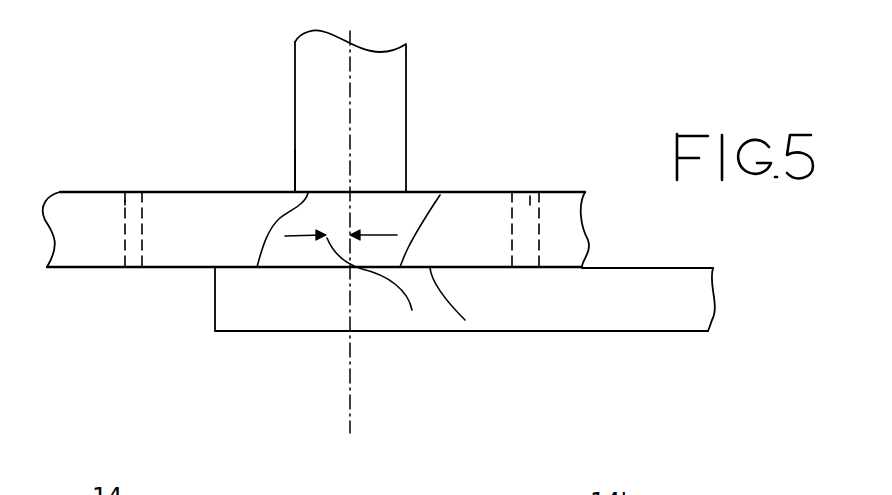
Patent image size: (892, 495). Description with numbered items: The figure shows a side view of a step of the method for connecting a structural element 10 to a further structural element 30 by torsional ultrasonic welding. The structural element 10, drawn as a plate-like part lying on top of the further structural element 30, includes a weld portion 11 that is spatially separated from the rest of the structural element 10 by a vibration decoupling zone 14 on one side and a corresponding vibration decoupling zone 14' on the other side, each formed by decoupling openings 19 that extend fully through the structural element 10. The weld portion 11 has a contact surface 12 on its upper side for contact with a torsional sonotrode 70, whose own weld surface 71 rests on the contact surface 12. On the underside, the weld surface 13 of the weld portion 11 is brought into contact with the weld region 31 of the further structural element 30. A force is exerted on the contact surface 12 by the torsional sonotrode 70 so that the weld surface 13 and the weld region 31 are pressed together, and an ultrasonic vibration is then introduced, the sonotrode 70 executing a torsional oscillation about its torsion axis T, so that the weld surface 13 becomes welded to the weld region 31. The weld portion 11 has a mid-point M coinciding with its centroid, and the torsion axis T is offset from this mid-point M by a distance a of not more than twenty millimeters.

The structural element 10 is at (590, 233).
The weld portion 11 is at (315, 258).
The contact surface 12 is at (332, 192).
The weld surface 13 is at (465, 320).
The vibration decoupling zone 14 is at (113, 189).
The vibration decoupling zone 14' is at (557, 175).
The decoupling openings 19 is at (128, 268).
The further structural element 30 is at (712, 300).
The weld region 31 is at (440, 195).
The torsional sonotrode 70 is at (406, 95).
The weld surface 71 is at (257, 267).
The mid-point M is at (412, 310).
The torsion axis T is at (367, 235).
The distance a is at (379, 223).